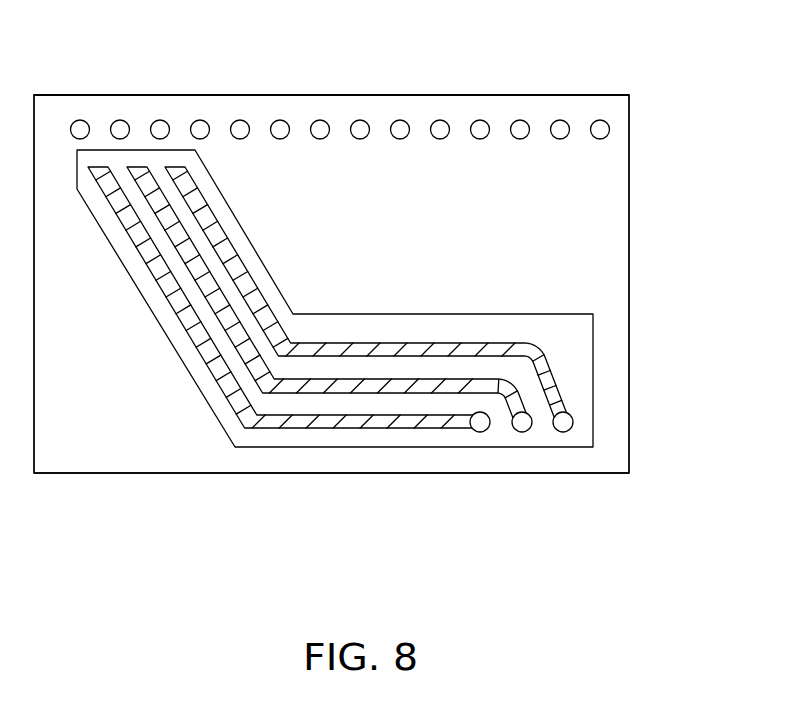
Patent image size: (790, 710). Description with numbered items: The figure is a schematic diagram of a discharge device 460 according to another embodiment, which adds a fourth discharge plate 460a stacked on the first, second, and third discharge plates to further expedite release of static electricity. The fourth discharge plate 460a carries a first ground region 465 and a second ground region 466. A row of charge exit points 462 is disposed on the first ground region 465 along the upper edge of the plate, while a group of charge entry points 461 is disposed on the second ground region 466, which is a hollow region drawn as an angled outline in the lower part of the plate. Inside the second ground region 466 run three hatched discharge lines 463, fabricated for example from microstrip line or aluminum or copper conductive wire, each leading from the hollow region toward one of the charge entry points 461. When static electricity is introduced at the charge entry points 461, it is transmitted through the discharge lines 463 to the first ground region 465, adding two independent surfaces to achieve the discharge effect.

The discharge device 460 is at (641, 307).
The fourth discharge plate 460a is at (602, 180).
The charge entry points 461 is at (563, 423).
The charge exit points 462 is at (202, 122).
The discharge lines 463 is at (415, 428).
The first ground region 465 is at (460, 103).
The second ground region 466 is at (310, 440).